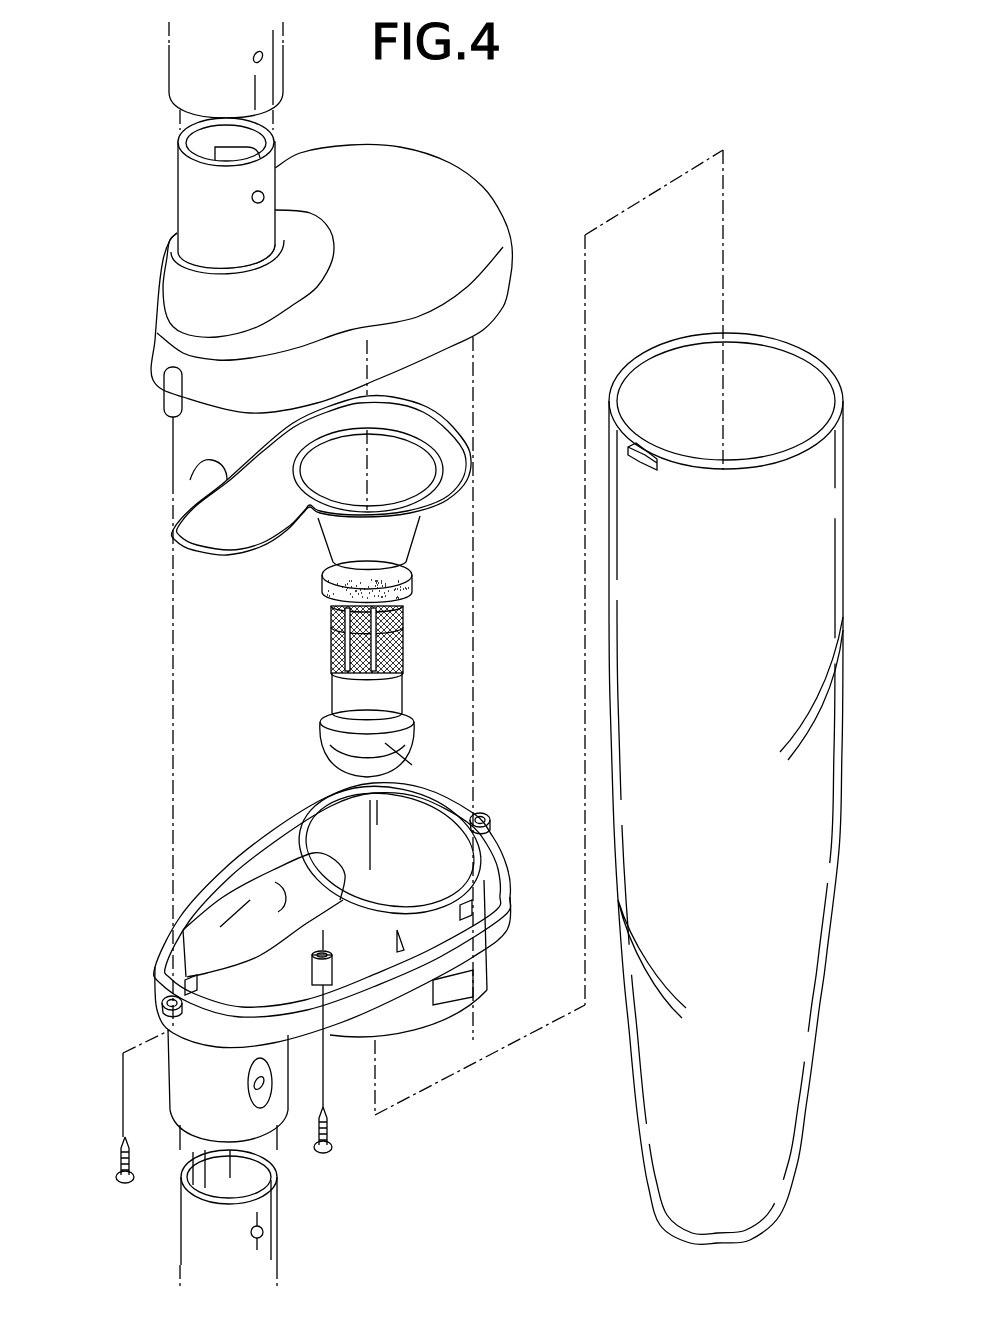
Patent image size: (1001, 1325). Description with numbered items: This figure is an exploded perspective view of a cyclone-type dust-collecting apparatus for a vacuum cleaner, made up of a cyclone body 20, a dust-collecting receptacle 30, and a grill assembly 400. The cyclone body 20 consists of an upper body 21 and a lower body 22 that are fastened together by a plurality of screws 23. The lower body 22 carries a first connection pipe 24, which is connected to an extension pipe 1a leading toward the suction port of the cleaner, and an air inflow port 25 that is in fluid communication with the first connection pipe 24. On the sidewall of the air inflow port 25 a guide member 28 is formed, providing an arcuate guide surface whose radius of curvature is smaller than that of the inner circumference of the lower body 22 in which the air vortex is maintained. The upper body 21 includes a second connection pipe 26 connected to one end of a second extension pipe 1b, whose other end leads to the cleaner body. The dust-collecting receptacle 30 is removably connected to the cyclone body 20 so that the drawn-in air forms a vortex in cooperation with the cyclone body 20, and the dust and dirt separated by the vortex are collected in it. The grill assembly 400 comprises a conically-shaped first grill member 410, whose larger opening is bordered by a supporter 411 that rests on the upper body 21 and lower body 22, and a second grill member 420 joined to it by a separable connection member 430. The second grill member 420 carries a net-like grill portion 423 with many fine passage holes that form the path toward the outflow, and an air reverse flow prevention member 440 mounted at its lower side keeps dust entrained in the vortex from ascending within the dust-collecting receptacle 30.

The extension pipe 1a is at (192, 1236).
The second extension pipe 1b is at (178, 44).
The cyclone body 20 is at (46, 578).
The upper body 21 is at (162, 375).
The lower body 22 is at (282, 847).
The screws 23 is at (330, 1134).
The first connection pipe 24 is at (188, 1084).
The air inflow port 25 is at (257, 905).
The second connection pipe 26 is at (192, 192).
The guide member 28 is at (343, 878).
The dust-collecting receptacle 30 is at (782, 352).
The grill assembly 400 is at (310, 628).
The first grill member 410 is at (325, 483).
The supporter 411 is at (190, 478).
The second grill member 420 is at (395, 688).
The grill portion 423 is at (407, 635).
The connection member 430 is at (407, 572).
The air reverse flow prevention member 440 is at (408, 745).